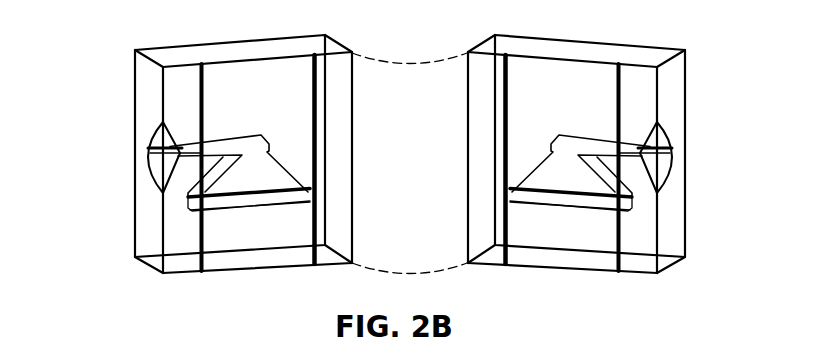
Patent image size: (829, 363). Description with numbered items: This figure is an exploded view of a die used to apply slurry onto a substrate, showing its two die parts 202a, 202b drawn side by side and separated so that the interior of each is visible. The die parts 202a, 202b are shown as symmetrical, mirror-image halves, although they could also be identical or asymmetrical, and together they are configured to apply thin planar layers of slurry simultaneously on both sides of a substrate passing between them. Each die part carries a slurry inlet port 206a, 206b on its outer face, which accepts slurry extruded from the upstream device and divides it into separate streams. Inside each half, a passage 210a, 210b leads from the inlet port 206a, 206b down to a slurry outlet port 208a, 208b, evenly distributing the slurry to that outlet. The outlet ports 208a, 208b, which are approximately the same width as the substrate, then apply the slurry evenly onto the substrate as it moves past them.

The die part 202a is at (146, 247).
The die part 202b is at (673, 247).
The slurry inlet port 206a is at (148, 150).
The slurry inlet port 206b is at (672, 150).
The slurry outlet port 208a is at (228, 213).
The slurry outlet port 208b is at (592, 213).
The passage 210a is at (283, 162).
The passage 210b is at (537, 160).